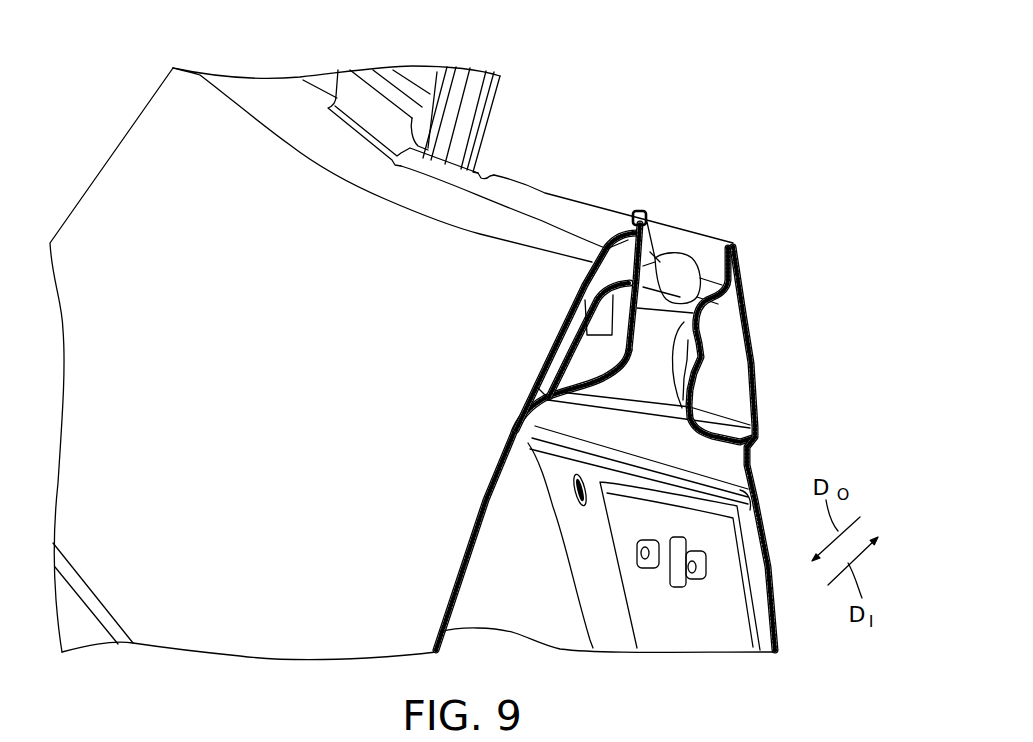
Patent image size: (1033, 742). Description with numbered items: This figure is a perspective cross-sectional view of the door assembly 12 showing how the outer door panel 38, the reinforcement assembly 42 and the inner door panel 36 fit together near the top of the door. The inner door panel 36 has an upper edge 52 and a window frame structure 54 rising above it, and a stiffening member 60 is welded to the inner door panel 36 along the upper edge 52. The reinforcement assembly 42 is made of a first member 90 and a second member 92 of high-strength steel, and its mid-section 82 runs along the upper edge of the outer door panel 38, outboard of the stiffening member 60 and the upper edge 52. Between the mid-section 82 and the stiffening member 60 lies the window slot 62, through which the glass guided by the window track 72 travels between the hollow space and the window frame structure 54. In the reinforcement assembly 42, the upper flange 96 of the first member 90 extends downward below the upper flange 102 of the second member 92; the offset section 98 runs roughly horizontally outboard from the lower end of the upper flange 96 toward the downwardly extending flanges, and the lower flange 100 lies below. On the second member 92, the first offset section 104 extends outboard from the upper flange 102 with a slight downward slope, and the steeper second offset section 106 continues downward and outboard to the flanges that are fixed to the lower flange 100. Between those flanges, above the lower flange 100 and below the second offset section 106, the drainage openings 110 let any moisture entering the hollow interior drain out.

The door assembly 12 is at (663, 113).
The inner door panel 36 is at (758, 381).
The outer door panel 38 is at (134, 363).
The reinforcement assembly 42 is at (607, 386).
The upper edge 52 is at (714, 245).
The window frame structure 54 is at (440, 87).
The stiffening member 60 is at (703, 327).
The window slot 62 is at (650, 236).
The window track 72 is at (465, 121).
The mid-section 82 is at (648, 250).
The first member 90 is at (697, 313).
The second member 92 is at (566, 340).
The upper flange 96 is at (630, 226).
The offset section 98 is at (622, 350).
The lower flange 100 is at (555, 420).
The upper flange 102 is at (620, 262).
The first offset section 104 is at (584, 287).
The second offset section 106 is at (562, 358).
The drainage openings 110 is at (538, 388).